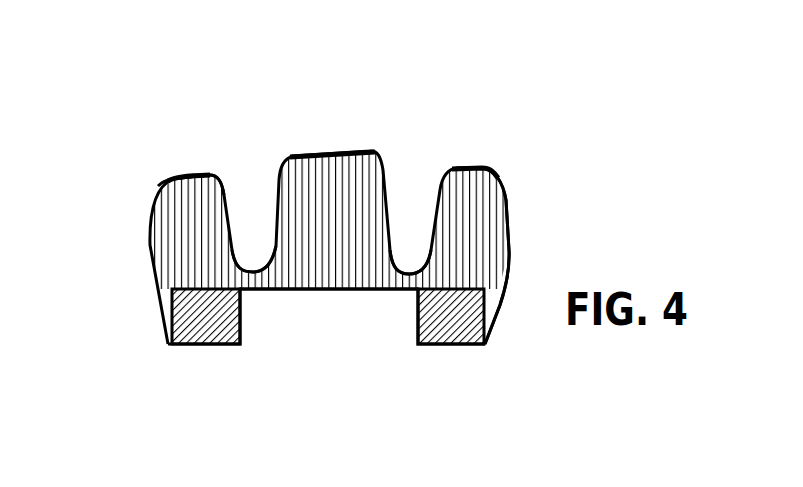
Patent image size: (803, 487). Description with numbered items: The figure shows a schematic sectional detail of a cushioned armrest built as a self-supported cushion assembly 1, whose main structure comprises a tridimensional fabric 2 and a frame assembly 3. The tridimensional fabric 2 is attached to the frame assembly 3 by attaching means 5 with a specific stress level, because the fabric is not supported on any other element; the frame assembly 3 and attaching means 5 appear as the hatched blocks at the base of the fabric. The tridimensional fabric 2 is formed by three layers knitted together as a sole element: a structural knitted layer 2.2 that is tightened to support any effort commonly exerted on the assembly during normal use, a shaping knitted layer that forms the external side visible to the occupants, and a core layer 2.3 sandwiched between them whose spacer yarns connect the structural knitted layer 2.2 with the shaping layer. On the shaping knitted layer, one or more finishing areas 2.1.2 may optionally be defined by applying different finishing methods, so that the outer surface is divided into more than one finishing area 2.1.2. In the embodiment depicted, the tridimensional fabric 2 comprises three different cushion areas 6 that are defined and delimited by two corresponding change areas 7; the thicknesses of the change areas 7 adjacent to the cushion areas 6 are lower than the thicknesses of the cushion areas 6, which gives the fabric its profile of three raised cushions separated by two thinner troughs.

The self-supported cushion assembly 1 is at (400, 75).
The tridimensional fabric 2 is at (148, 248).
The finishing area 2.1.2 is at (182, 177).
The structural knitted layer 2.2 is at (342, 290).
The core layer 2.3 is at (497, 213).
The frame assembly 3 is at (457, 333).
The attaching means 5 is at (172, 315).
The cushion areas 6 is at (172, 200).
The change areas 7 is at (250, 270).